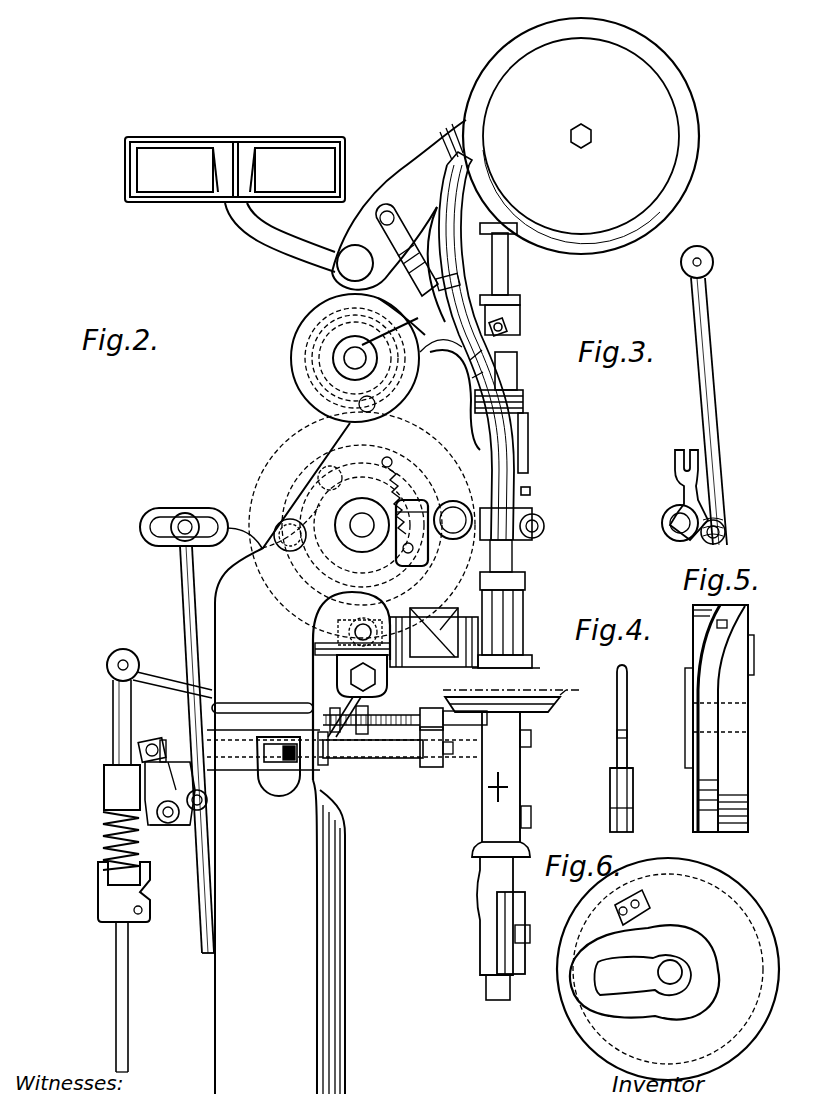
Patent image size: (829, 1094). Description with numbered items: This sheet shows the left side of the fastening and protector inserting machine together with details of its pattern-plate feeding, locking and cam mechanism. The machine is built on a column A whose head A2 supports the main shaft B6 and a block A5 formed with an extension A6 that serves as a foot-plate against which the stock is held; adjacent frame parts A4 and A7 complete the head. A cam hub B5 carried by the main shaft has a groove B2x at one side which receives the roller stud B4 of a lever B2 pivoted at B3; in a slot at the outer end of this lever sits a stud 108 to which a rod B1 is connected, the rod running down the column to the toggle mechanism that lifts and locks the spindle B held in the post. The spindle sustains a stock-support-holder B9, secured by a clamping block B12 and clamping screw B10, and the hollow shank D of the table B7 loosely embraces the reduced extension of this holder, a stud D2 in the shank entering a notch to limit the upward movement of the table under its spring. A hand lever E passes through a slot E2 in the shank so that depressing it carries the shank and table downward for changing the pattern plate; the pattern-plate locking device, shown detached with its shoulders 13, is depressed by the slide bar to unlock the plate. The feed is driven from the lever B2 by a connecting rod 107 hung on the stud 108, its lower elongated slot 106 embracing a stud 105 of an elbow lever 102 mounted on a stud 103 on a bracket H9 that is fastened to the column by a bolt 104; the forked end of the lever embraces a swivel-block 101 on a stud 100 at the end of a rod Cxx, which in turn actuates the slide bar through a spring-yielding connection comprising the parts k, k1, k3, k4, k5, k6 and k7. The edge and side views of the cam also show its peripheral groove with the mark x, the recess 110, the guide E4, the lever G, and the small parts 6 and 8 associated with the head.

In FIG. 2, the column A is at (343, 886).
In FIG. 2, the head A2 is at (463, 603).
In FIG. 2, the frame arch A4 is at (406, 662).
In FIG. 2, the block A5 is at (434, 662).
In FIG. 2, the extension A6 is at (528, 660).
In FIG. 2, the frame plate edge A7 is at (530, 668).
In FIG. 2, the spindle or carrier B is at (487, 985).
In FIG. 2, the rod B1 is at (201, 858).
In FIG. 2, the lever B2 is at (262, 530).
In FIG. 2, the groove B2x is at (300, 592).
In FIG. 2, the pivot B3 is at (262, 548).
In FIG. 2, the roller stud B4 is at (352, 520).
In FIG. 2, the cam hub B5 is at (300, 480).
In FIG. 5, the cam hub B5 is at (752, 808).
In FIG. 6, the cam hub B5 is at (733, 890).
In FIG. 2, the main shaft B6 is at (330, 478).
In FIG. 2, the table B7 is at (560, 697).
In FIG. 2, the stock-support-holder B9 is at (477, 915).
In FIG. 2, the clamping screw B10 is at (530, 934).
In FIG. 2, the clamping block B12 is at (527, 910).
In FIG. 2, the rod Cxx is at (370, 756).
In FIG. 2, the hollow shank D is at (485, 803).
In FIG. 4, the hollow shank D is at (612, 789).
In FIG. 2, the stud D2 is at (531, 818).
In FIG. 2, the hand lever E is at (492, 790).
In FIG. 2, the slot E2 is at (507, 782).
In FIG. 5, the guide block E4 is at (712, 778).
In FIG. 2, the lever G is at (450, 395).
In FIG. 2, the bracket H9 is at (134, 773).
In FIG. 2, the slide k is at (438, 757).
In FIG. 2, the link k1 is at (430, 733).
In FIG. 2, the screw k3 is at (371, 708).
In FIG. 2, the nut k4 is at (453, 708).
In FIG. 2, the collar k5 is at (331, 711).
In FIG. 2, the head k6 is at (376, 712).
In FIG. 2, the stop k7 is at (443, 752).
In FIG. 2, the mark x is at (567, 687).
In FIG. 4, the block 6 is at (615, 768).
In FIG. 2, the pin 8 is at (472, 380).
In FIG. 2, the shoulders 13 is at (466, 360).
In FIG. 4, the shoulders 13 is at (611, 767).
In FIG. 2, the stud 100 is at (166, 742).
In FIG. 2, the swivel-block 101 is at (152, 744).
In FIG. 2, the elbow lever 102 is at (146, 786).
In FIG. 3, the elbow lever 102 is at (674, 498).
In FIG. 2, the stud 103 is at (168, 826).
In FIG. 2, the bolt 104 is at (179, 776).
In FIG. 2, the stud 105 is at (206, 803).
In FIG. 3, the stud 105 is at (727, 530).
In FIG. 2, the elongated slot 106 is at (167, 812).
In FIG. 3, the elongated slot 106 is at (727, 537).
In FIG. 3, the connecting rod 107 is at (700, 409).
In FIG. 2, the stud 108 is at (186, 515).
In FIG. 6, the cam slot 110 is at (588, 994).